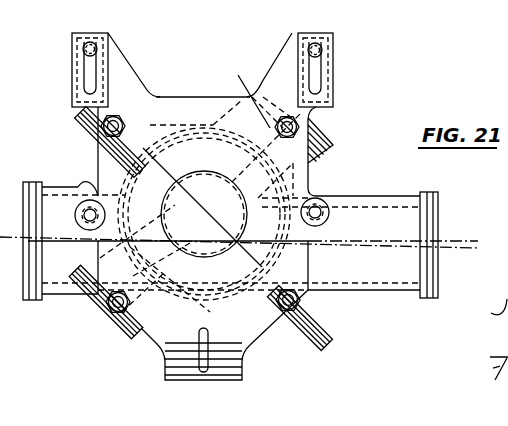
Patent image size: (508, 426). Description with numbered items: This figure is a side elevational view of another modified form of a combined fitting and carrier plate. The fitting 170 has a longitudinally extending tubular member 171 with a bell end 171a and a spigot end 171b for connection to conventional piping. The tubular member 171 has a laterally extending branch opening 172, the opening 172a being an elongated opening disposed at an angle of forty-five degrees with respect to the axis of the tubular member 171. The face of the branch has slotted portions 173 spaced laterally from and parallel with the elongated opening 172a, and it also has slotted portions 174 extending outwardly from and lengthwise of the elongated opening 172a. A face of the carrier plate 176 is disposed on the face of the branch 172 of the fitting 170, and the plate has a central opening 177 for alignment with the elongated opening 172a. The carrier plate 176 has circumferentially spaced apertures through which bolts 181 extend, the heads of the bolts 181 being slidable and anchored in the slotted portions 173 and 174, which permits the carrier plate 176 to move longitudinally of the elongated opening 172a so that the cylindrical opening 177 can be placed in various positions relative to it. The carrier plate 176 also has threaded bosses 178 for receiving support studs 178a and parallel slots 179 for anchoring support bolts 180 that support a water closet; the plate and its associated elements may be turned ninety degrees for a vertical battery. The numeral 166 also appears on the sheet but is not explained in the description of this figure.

The conduit 166 is at (196, 11).
The fitting 170 is at (371, 182).
The tubular member 171 is at (386, 196).
The bell end 171a is at (16, 292).
The spigot end 171b is at (444, 199).
The branch opening 172 is at (246, 298).
The elongated opening 172a is at (189, 84).
The slotted portions 173 is at (342, 128).
The slotted portions 174 is at (76, 117).
The carrier plate 176 is at (179, 96).
The central opening 177 is at (208, 185).
The threaded bosses 178 is at (92, 201).
The support studs 178a is at (89, 218).
The parallel slots 179 is at (86, 77).
The support bolts 180 is at (89, 41).
The bolts 181 is at (300, 122).